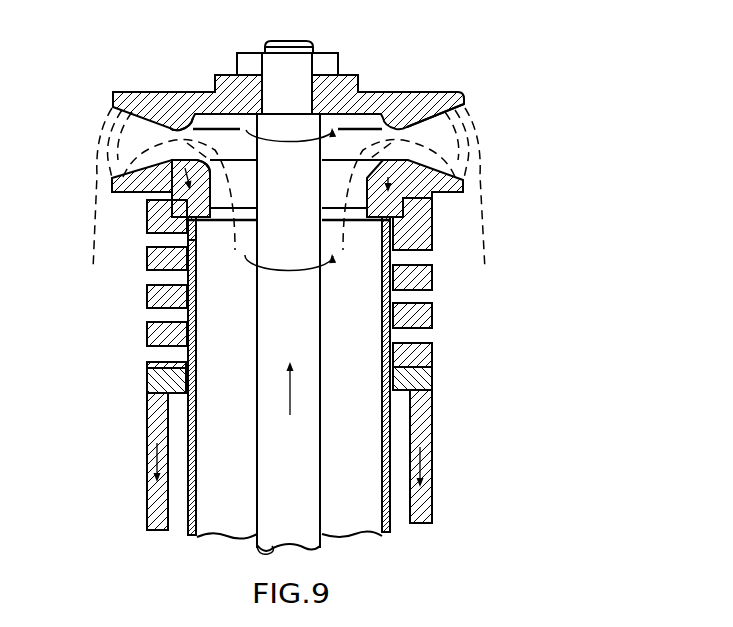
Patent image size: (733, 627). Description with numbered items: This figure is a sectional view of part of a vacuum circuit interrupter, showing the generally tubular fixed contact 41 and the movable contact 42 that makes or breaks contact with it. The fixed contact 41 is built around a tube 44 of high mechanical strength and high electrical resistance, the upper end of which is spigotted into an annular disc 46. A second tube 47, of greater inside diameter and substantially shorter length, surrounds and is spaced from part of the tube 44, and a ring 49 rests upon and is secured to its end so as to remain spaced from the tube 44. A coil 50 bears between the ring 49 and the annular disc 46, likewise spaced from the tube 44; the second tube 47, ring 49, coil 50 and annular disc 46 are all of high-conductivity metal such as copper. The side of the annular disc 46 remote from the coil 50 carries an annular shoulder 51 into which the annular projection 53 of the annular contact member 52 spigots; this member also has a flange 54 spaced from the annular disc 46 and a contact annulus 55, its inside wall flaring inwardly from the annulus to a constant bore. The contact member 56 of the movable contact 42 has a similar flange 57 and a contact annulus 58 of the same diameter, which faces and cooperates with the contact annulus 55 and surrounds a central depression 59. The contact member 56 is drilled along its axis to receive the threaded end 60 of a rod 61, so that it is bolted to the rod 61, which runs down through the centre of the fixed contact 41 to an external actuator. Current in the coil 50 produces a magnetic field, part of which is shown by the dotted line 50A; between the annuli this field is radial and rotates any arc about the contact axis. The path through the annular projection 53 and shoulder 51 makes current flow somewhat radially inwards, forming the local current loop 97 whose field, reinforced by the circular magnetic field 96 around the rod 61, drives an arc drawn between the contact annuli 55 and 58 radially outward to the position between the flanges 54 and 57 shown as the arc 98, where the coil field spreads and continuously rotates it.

The fixed contact 41 is at (138, 493).
The movable contact 42 is at (153, 90).
The tube 44 is at (382, 423).
The annular disc 46 is at (430, 224).
The second tube 47 is at (433, 487).
The ring 49 is at (150, 386).
The coil 50 is at (150, 335).
The dotted line (magnetic field) 50A is at (100, 204).
The annular shoulder 51 is at (198, 224).
The annular contact member 52 is at (470, 199).
The annular projection 53 is at (197, 200).
The flange 54 is at (128, 197).
The contact annulus 55 is at (190, 165).
The contact member 56 is at (408, 98).
The flange 57 is at (122, 90).
The contact annulus 58 is at (382, 131).
The central depression 59 is at (202, 110).
The threaded end 60 is at (277, 87).
The rod 61 is at (297, 477).
The circular magnetic field 96 is at (334, 265).
The local current loop 97 is at (397, 136).
The arc 98 is at (480, 139).